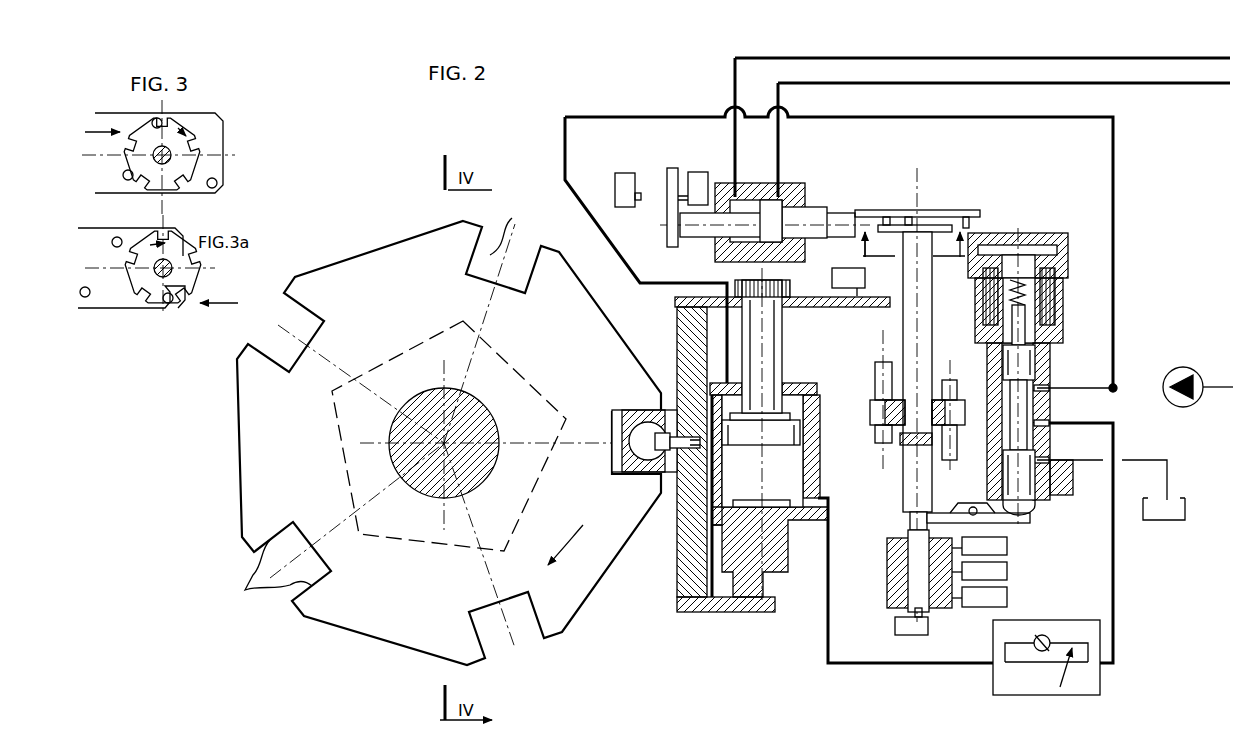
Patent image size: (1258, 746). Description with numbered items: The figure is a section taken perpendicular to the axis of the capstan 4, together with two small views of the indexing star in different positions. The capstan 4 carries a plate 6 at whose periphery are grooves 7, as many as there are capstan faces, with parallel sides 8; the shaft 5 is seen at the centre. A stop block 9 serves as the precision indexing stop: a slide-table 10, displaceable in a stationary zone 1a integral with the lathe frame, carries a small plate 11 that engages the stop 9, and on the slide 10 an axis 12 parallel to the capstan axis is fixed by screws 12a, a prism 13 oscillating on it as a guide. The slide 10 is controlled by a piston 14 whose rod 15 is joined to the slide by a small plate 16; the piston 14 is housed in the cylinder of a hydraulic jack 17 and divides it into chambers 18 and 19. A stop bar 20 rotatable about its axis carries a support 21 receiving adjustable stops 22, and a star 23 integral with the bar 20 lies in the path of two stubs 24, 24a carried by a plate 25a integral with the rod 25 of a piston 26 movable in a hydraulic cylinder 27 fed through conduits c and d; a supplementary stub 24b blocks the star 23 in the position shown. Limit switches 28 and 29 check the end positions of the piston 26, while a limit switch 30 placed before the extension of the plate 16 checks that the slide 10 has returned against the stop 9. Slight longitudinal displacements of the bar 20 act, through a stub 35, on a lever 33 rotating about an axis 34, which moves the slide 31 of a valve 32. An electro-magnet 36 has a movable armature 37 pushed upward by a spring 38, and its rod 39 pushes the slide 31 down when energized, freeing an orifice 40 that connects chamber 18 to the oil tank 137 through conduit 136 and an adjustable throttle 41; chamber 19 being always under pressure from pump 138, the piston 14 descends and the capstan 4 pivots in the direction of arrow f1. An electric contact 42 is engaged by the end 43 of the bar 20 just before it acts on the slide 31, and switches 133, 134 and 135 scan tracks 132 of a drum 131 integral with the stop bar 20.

In FIG. 2, the stationary zone 1a is at (785, 556).
In FIG. 2, the capstan 4 is at (403, 345).
In FIG. 2, the hub shaft 5 is at (498, 416).
In FIG. 2, the plate 6 is at (240, 465).
In FIG. 2, the grooves 7 is at (541, 676).
In FIG. 2, the sides 8 is at (271, 575).
In FIG. 2, the stop block 9 is at (766, 600).
In FIG. 2, the slide-table 10 is at (692, 578).
In FIG. 2, the small plate 11 is at (702, 606).
In FIG. 2, the axis 12 is at (666, 476).
In FIG. 2, the screws 12a is at (633, 401).
In FIG. 2, the prism 13 is at (614, 466).
In FIG. 2, the piston 14 is at (750, 450).
In FIG. 2, the rod 15 is at (770, 340).
In FIG. 2, the small plate 16 is at (800, 300).
In FIG. 2, the hydraulic jack 17 is at (812, 436).
In FIG. 2, the chamber 18 is at (806, 480).
In FIG. 2, the chamber 19 is at (796, 400).
In FIG. 2, the stop bar 20 is at (926, 347).
In FIG. 2, the support 21 is at (874, 440).
In FIG. 2, the stops 22 is at (878, 366).
In FIG. 2, the star 23 is at (932, 224).
In FIG. 3, the star 23 is at (213, 113).
In FIG. 3A, the star 23 is at (190, 275).
In FIG. 2, the stub 24 is at (893, 216).
In FIG. 3, the stub 24 is at (155, 117).
In FIG. 3A, the stub 24 is at (117, 237).
In FIG. 2, the stub 24a is at (972, 222).
In FIG. 3, the stub 24a is at (214, 188).
In FIG. 3A, the stub 24a is at (172, 302).
In FIG. 2, the supplementary stub 24b is at (888, 212).
In FIG. 3, the supplementary stub 24b is at (123, 175).
In FIG. 3A, the supplementary stub 24b is at (82, 288).
In FIG. 2, the rod 25 is at (812, 222).
In FIG. 2, the plate 25a is at (963, 214).
In FIG. 3, the plate 25a is at (108, 118).
In FIG. 3A, the plate 25a is at (94, 238).
In FIG. 2, the piston 26 is at (770, 205).
In FIG. 2, the hydraulic cylinder 27 is at (735, 262).
In FIG. 2, the electric limit switch 28 is at (637, 196).
In FIG. 2, the electric limit switch 29 is at (681, 198).
In FIG. 2, the electric limit switch 30 is at (862, 289).
In FIG. 2, the slide 31 is at (1022, 493).
In FIG. 2, the valve 32 is at (1050, 355).
In FIG. 2, the lever 33 is at (1010, 522).
In FIG. 2, the axis 34 is at (973, 507).
In FIG. 2, the stub 35 is at (908, 517).
In FIG. 2, the electro-magnet 36 is at (1058, 302).
In FIG. 2, the movable armature 37 is at (1020, 245).
In FIG. 2, the spring 38 is at (1045, 282).
In FIG. 2, the rod 39 is at (996, 322).
In FIG. 2, the orifice 40 is at (1052, 475).
In FIG. 2, the throttle 41 is at (1070, 675).
In FIG. 2, the electric contact 42 is at (918, 630).
In FIG. 2, the end 43 is at (895, 614).
In FIG. 2, the drum 131 is at (888, 582).
In FIG. 2, the tracks 132 is at (962, 608).
In FIG. 2, the switch 133 is at (995, 598).
In FIG. 2, the switch 134 is at (995, 575).
In FIG. 2, the switch 135 is at (990, 550).
In FIG. 2, the conduit 136 is at (900, 664).
In FIG. 2, the oil tank 137 is at (1180, 530).
In FIG. 2, the pump 138 is at (1196, 400).
In FIG. 2, the hydraulic conduit c is at (1011, 136).
In FIG. 2, the hydraulic conduit d is at (990, 123).
In FIG. 2, the arrow f1 is at (547, 554).